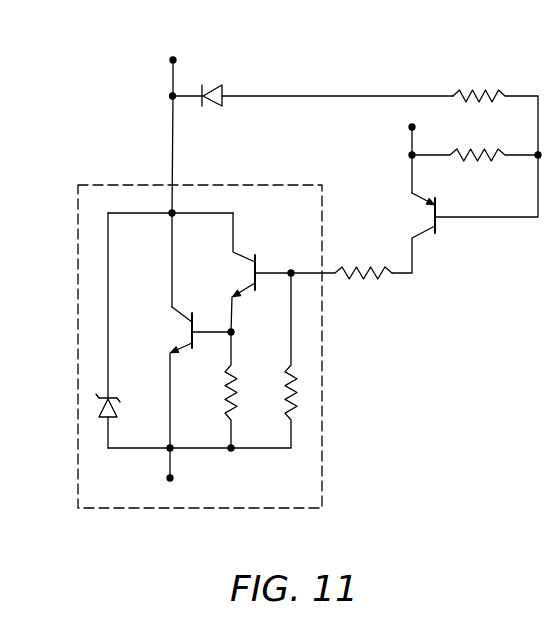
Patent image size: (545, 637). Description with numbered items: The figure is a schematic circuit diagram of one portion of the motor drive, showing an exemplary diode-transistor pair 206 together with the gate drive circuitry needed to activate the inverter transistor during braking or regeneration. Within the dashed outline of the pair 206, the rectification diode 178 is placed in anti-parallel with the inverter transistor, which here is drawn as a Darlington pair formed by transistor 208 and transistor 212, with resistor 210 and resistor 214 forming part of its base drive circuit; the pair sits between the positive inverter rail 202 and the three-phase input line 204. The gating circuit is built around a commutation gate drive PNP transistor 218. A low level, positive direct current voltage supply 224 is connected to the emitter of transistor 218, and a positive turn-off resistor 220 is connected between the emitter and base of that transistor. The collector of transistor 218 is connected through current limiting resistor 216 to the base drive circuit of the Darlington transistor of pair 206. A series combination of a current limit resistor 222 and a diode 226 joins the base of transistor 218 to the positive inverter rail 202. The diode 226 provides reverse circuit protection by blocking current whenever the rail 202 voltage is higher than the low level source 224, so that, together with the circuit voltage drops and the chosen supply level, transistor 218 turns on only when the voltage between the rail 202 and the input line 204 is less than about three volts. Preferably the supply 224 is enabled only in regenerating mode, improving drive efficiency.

The positive inverter rail 202 is at (173, 60).
The diode 226 is at (213, 83).
The current limit resistor 222 is at (473, 92).
The low level positive direct current voltage supply 224 is at (412, 127).
The positive turn-off resistor 220 is at (492, 148).
The commutation gate drive PNP transistor 218 is at (437, 220).
The current limiting resistor 216 is at (362, 277).
The Darlington transistor 212 is at (260, 263).
The Darlington transistor 208 is at (197, 323).
The resistor 210 is at (243, 385).
The resistor 214 is at (285, 390).
The diode 178 is at (117, 405).
The three-phase input line 204 is at (207, 469).
The diode-transistor pair 206 is at (322, 430).